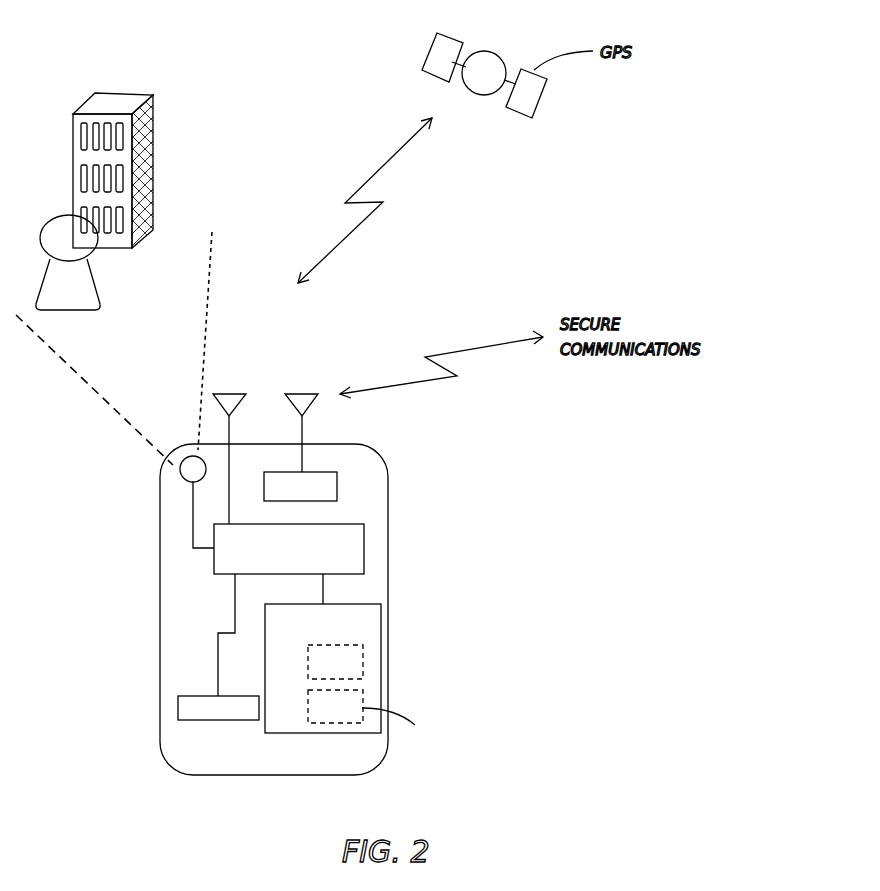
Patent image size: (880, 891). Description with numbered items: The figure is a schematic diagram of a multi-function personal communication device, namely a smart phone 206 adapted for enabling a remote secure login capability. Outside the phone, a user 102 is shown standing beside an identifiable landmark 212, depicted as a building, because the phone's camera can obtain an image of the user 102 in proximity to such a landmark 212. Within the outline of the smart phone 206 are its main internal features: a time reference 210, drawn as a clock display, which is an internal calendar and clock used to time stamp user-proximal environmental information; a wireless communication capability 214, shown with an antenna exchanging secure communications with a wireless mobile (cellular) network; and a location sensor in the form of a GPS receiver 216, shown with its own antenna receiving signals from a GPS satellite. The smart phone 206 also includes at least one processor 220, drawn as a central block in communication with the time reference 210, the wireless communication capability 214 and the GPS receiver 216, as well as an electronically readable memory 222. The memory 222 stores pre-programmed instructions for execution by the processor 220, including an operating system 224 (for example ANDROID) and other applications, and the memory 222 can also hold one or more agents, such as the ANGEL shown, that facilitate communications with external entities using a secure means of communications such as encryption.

The user 102 is at (60, 312).
The identifiable landmark 212 is at (125, 90).
The smart phone 206 is at (160, 583).
The time reference 210 is at (178, 705).
The wireless communication capability 214 is at (314, 400).
The GPS receiver 216 is at (222, 392).
The processor 220 is at (289, 549).
The electronically readable memory 222 is at (365, 676).
The operating system 224 is at (362, 657).